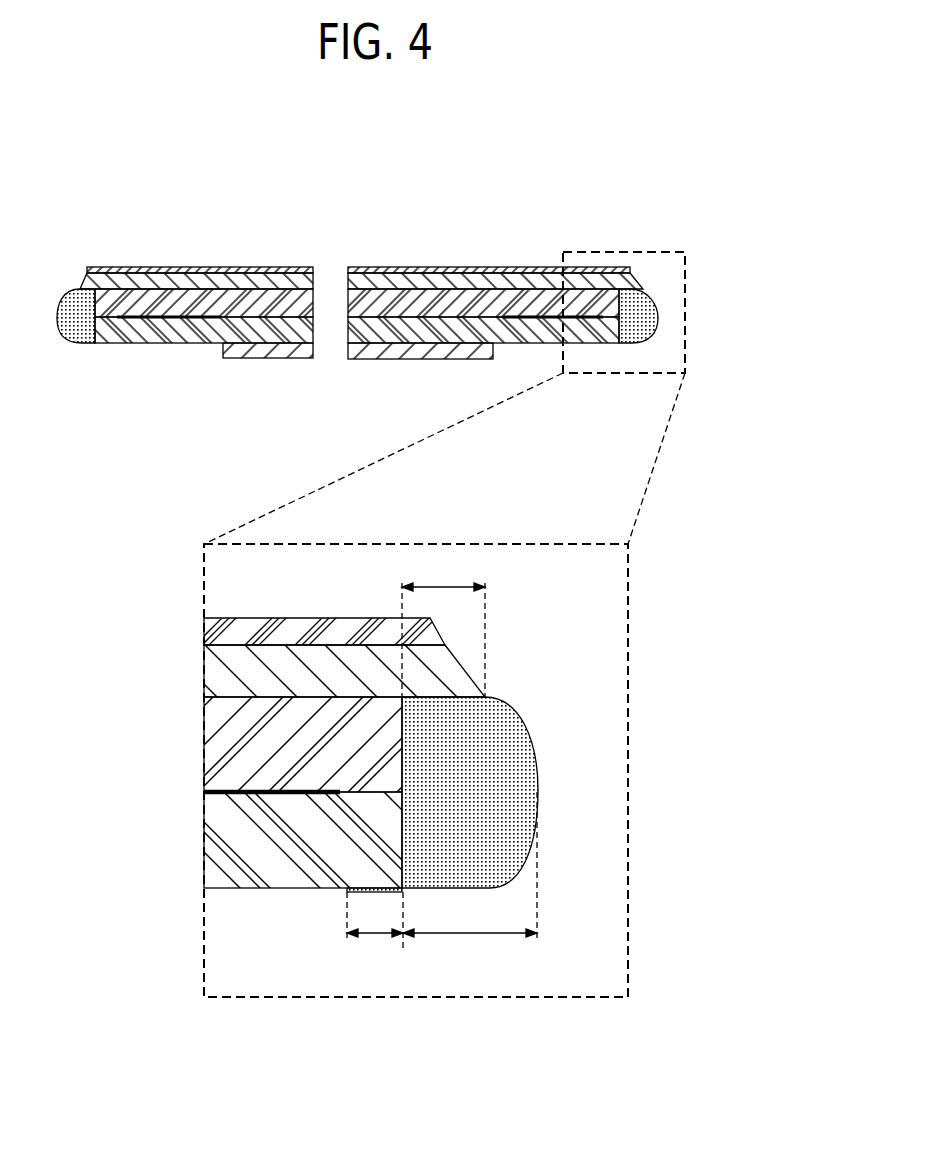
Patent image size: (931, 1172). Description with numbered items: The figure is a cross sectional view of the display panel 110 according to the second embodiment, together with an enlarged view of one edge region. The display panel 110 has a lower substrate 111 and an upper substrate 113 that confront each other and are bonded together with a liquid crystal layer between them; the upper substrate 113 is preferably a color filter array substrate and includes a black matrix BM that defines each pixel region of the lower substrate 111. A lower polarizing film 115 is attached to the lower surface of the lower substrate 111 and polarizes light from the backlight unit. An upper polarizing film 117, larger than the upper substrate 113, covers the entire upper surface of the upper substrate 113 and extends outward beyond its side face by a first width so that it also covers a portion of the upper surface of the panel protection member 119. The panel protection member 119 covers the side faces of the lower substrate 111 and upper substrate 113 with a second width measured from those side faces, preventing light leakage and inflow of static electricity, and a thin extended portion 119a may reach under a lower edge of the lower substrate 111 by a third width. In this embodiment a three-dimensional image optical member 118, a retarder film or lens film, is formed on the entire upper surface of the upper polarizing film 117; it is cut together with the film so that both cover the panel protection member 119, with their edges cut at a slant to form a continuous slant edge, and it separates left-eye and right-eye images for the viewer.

The display panel 110 is at (93, 209).
The lower substrate 111 is at (415, 335).
The upper substrate 113 is at (457, 300).
The lower polarizing film 115 is at (373, 350).
The upper polarizing film 117 is at (500, 282).
The 3-dimensional image optical member 118 is at (213, 267).
The panel protection member 119 is at (658, 318).
The extended portion of the panel protection member 119a is at (367, 888).
The black matrix BM is at (282, 792).